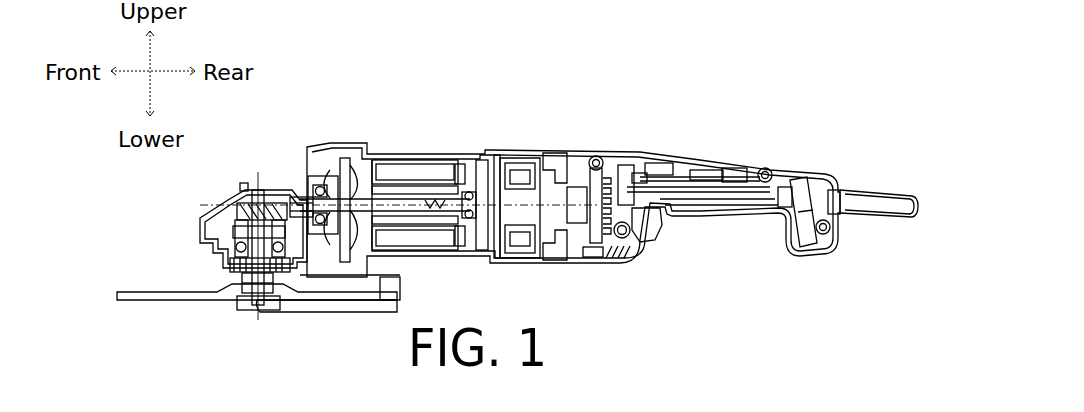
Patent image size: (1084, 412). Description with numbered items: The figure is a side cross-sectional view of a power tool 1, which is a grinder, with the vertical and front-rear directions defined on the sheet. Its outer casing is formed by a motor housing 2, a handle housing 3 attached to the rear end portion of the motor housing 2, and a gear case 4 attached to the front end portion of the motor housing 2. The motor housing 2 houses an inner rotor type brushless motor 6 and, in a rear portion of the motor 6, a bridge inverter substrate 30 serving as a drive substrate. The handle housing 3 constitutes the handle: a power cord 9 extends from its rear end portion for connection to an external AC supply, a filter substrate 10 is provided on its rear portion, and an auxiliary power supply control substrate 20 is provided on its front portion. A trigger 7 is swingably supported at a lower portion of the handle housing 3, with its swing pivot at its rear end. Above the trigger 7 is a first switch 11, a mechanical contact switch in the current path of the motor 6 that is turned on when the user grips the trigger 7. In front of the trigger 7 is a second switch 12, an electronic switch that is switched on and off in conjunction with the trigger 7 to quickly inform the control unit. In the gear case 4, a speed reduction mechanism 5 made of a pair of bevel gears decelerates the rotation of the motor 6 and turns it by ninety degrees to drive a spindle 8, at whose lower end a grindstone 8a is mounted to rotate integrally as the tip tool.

The power tool 1 is at (826, 391).
The motor housing 2 is at (457, 153).
The handle housing 3 is at (708, 156).
The gear case 4 is at (200, 215).
The speed reduction mechanism 5 is at (290, 193).
The motor 6 is at (403, 152).
The trigger 7 is at (667, 212).
The spindle 8 is at (253, 298).
The grindstone 8a is at (163, 296).
The power cord 9 is at (877, 190).
The filter substrate 10 is at (802, 180).
The first switch 11 is at (678, 156).
The second switch 12 is at (630, 177).
The auxiliary power supply control substrate 20 is at (604, 153).
The bridge inverter substrate 30 is at (505, 152).